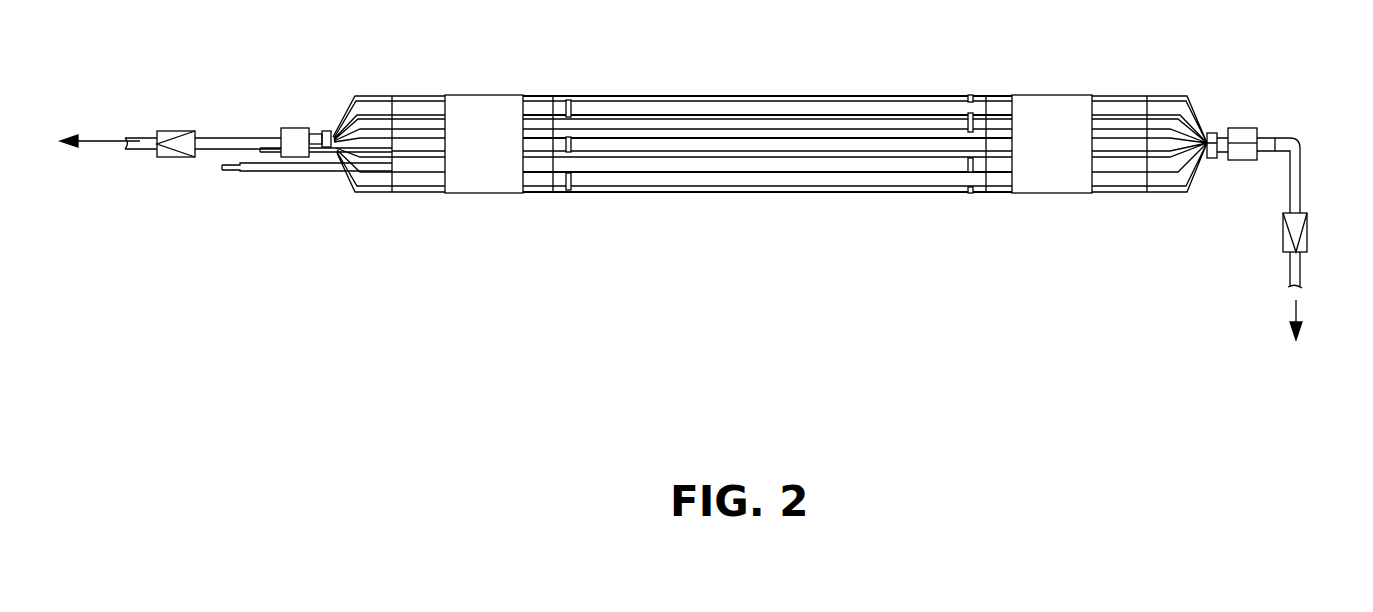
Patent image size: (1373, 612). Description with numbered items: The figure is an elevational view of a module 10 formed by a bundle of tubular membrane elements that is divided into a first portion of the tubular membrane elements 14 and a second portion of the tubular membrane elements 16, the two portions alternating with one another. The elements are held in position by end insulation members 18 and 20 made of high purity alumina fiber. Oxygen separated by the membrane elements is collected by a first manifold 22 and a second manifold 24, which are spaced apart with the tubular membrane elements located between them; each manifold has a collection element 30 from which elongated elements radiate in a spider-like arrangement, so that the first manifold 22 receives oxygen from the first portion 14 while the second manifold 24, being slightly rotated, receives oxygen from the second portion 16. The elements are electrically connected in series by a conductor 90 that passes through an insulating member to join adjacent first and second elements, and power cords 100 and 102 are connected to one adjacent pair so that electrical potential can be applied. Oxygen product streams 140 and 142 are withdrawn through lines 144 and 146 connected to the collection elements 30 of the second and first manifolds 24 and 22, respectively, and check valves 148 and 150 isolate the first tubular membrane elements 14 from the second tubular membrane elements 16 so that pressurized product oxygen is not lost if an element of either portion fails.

The module 10 is at (789, 246).
The first portion of the tubular membrane elements 14 is at (702, 155).
The second portion of the tubular membrane elements 16 is at (637, 135).
The end insulation member 18 is at (477, 128).
The end insulation member 20 is at (1040, 137).
The first manifold 22 is at (345, 78).
The second manifold 24 is at (1192, 76).
The collection element 30 is at (295, 135).
The conductor 90 is at (577, 148).
The power cord 100 is at (363, 155).
The power cord 102 is at (276, 175).
The oxygen product stream 140 is at (1290, 306).
The oxygen product stream 142 is at (110, 141).
The line 144 is at (1300, 185).
The line 146 is at (218, 135).
The check valve 148 is at (1283, 232).
The check valve 150 is at (170, 158).